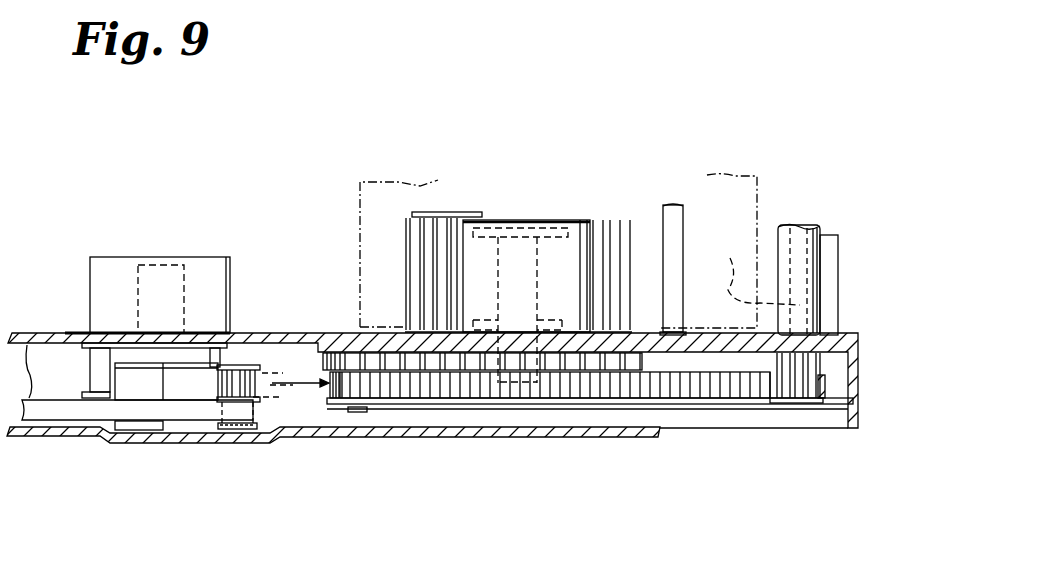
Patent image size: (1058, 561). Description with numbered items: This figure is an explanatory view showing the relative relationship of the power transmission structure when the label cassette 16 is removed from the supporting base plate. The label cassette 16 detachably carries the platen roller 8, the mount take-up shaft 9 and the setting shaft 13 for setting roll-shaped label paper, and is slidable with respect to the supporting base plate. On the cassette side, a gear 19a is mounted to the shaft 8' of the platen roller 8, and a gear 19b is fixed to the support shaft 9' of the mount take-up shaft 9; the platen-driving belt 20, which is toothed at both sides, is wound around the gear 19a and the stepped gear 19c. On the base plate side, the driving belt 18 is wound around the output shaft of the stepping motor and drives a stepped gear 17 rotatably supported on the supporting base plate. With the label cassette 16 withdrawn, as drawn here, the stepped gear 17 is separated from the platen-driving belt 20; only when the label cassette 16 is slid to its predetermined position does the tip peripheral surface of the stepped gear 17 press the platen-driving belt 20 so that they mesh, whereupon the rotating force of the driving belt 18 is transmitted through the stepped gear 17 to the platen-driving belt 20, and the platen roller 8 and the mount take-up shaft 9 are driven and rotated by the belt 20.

The platen roller 8 is at (749, 242).
The shaft of the platen roller 8' is at (754, 269).
The mount take-up shaft 9 is at (496, 221).
The support shaft of the mount take-up shaft 9' is at (520, 275).
The setting shaft 13 is at (117, 282).
The label cassette 16 is at (850, 337).
The stepped gear 17 is at (235, 377).
The driving belt 18 is at (72, 410).
The gear 19a is at (800, 388).
The gear 19b is at (653, 338).
The stepped gear 19c is at (327, 363).
The platen-driving belt 20 is at (700, 387).